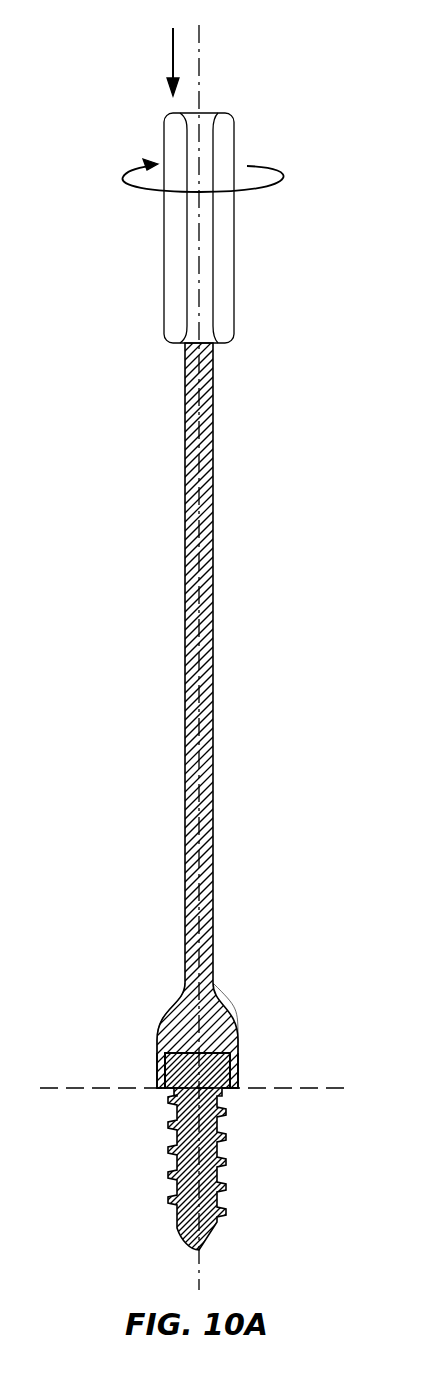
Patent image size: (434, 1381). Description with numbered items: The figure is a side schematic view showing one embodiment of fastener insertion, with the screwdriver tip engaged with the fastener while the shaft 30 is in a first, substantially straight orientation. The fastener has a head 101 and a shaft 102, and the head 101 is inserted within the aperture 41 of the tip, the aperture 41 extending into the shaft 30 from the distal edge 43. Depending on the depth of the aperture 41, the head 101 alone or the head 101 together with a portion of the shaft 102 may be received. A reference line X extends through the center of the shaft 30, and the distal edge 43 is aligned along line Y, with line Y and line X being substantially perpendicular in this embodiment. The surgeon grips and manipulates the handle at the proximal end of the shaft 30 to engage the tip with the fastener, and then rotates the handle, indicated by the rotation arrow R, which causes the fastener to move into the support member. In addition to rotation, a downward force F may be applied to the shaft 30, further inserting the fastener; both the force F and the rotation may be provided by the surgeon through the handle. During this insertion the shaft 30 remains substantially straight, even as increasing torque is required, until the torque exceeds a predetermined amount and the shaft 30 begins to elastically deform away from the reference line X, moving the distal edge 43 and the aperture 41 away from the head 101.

The shaft 30 is at (214, 850).
The aperture 41 is at (237, 1036).
The distal edge 43 is at (240, 1090).
The head 101 is at (163, 1058).
The shaft 102 is at (215, 1125).
The reference line X is at (200, 50).
The line Y is at (330, 1088).
The downward force F is at (162, 60).
The rotation direction R is at (202, 186).